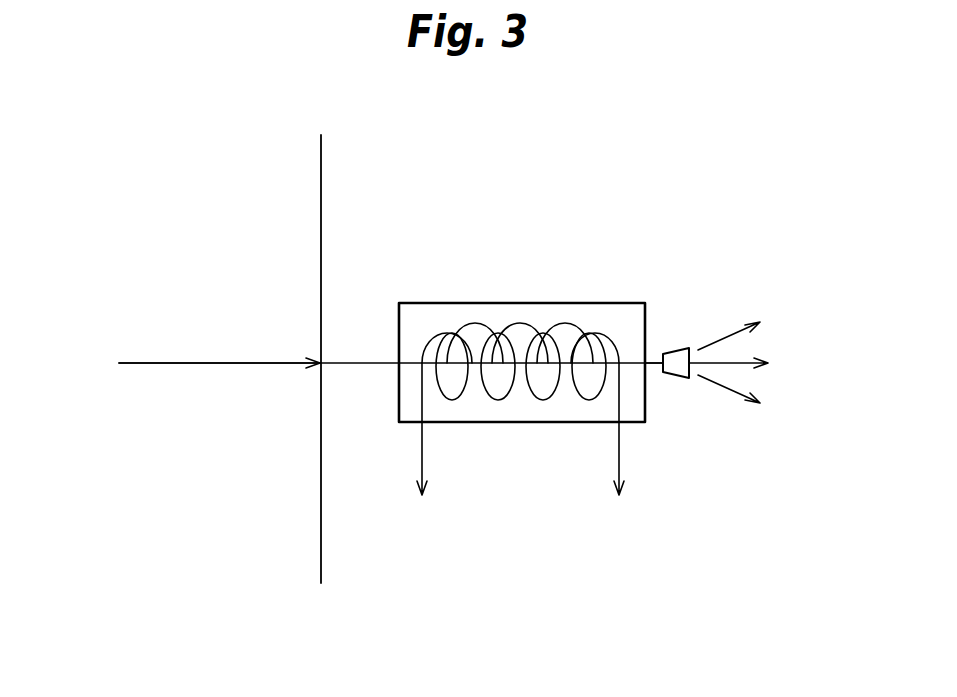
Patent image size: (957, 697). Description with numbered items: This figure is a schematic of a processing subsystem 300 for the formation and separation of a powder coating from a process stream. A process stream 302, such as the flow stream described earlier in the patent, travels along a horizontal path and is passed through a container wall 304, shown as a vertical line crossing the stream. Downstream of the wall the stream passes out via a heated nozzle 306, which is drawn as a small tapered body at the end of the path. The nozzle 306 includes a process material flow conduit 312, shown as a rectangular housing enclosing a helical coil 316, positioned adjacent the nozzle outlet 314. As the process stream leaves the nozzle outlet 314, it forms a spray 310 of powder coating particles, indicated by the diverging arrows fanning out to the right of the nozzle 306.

The processing subsystem 300 is at (536, 208).
The process stream 302 is at (153, 363).
The container wall 304 is at (321, 173).
The heated nozzle 306 is at (655, 357).
The spray of powder coating particles 310 is at (742, 360).
The process material flow conduit 312 is at (409, 363).
The nozzle outlet 314 is at (673, 378).
The coil 316 is at (498, 400).